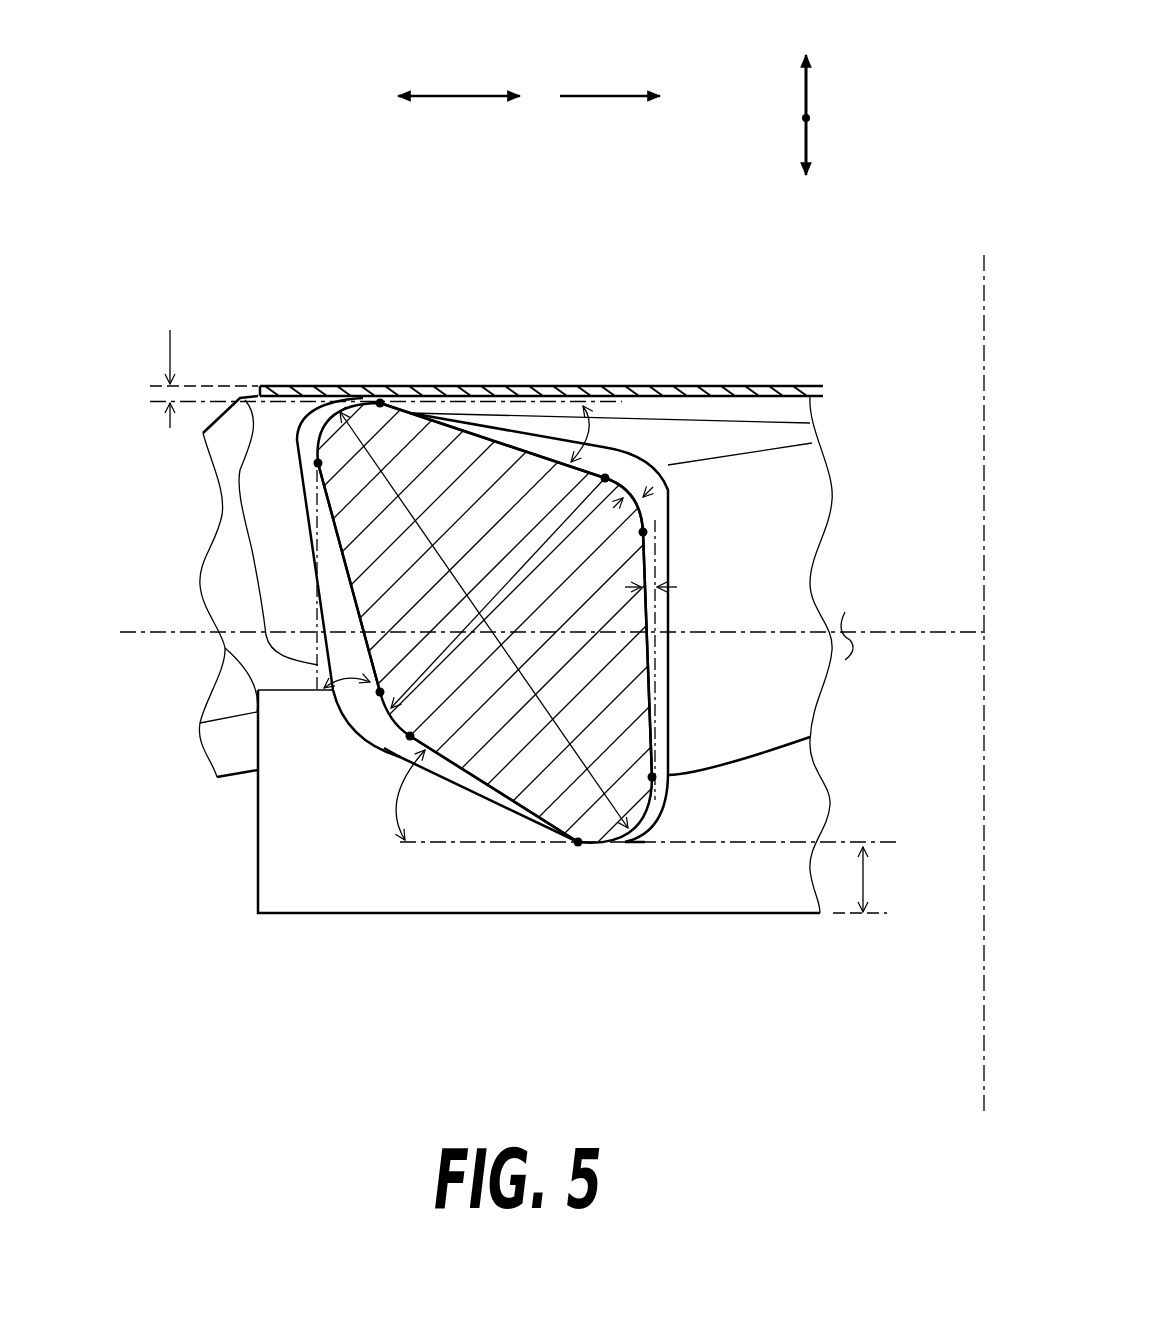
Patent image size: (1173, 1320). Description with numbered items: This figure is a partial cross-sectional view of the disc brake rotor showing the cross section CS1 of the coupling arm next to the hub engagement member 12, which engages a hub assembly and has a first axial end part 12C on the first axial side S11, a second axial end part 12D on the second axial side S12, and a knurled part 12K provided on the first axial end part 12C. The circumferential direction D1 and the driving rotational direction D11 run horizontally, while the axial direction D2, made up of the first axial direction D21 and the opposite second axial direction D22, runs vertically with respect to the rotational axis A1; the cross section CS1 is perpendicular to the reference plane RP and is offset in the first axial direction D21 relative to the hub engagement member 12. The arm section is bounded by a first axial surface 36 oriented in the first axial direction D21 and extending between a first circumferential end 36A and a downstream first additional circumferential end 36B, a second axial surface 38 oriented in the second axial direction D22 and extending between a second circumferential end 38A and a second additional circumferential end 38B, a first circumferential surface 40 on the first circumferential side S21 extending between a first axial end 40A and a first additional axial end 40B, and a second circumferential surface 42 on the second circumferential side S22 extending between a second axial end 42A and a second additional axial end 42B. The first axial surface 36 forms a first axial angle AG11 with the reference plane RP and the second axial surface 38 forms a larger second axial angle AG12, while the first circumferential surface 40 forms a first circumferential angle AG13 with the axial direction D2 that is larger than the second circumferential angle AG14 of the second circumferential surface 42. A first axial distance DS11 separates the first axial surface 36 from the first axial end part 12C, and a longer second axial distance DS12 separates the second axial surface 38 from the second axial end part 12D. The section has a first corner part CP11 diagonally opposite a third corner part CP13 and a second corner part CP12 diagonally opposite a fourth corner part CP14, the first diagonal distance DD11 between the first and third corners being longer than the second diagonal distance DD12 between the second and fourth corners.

The circumferential direction D1 is at (468, 94).
The driving rotational direction D11 is at (610, 94).
The axial direction D2 is at (900, 88).
The first axial direction D21 is at (812, 94).
The second axial direction D22 is at (812, 140).
The rotational axis A1 is at (962, 1058).
The reference plane RP is at (140, 634).
The hub engagement member 12 is at (846, 378).
The first axial end part 12C is at (265, 385).
The second axial end part 12D is at (290, 915).
The knurled part 12K is at (801, 383).
The first axial surface 36 is at (498, 436).
The first circumferential end 36A is at (378, 398).
The first additional circumferential end 36B is at (608, 474).
The second axial surface 38 is at (478, 780).
The second circumferential end 38A is at (408, 740).
The second additional circumferential end 38B is at (580, 847).
The first circumferential surface 40 is at (353, 583).
The first axial end 40A is at (316, 463).
The first additional axial end 40B is at (378, 694).
The second circumferential surface 42 is at (650, 660).
The second axial end 42A is at (660, 526).
The second additional axial end 42B is at (654, 777).
The first corner part CP11 is at (322, 393).
The second corner part CP12 is at (668, 488).
The third corner part CP13 is at (640, 846).
The fourth corner part CP14 is at (392, 746).
The first axial side S11 is at (556, 372).
The second axial side S12 is at (538, 928).
The first circumferential side S21 is at (331, 522).
The second circumferential side S22 is at (662, 710).
The cross section CS1 is at (463, 428).
The first diagonal distance DD11 is at (378, 466).
The second diagonal distance DD12 is at (647, 532).
The first axial angle AG11 is at (588, 425).
The second axial angle AG12 is at (400, 845).
The first circumferential angle AG13 is at (322, 688).
The second circumferential angle AG14 is at (677, 587).
The first axial distance DS11 is at (170, 360).
The second axial distance DS12 is at (864, 888).